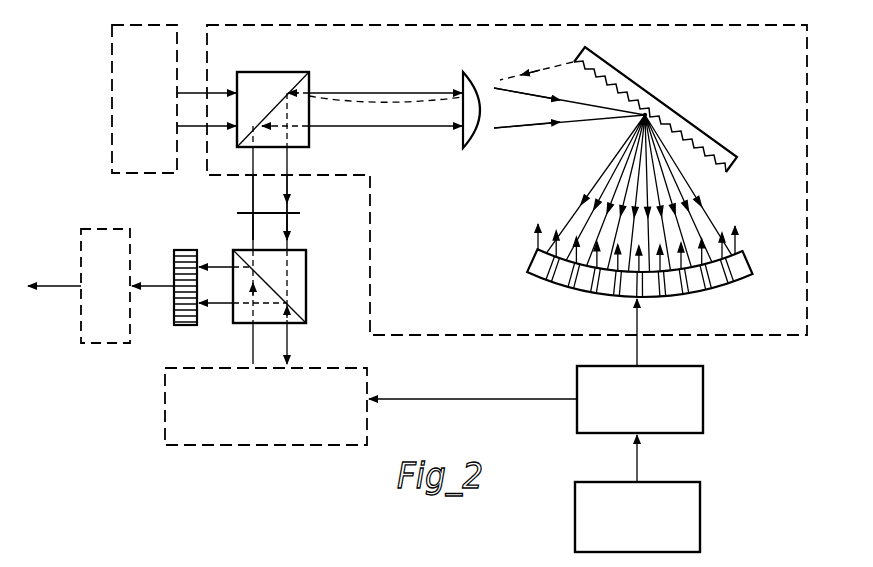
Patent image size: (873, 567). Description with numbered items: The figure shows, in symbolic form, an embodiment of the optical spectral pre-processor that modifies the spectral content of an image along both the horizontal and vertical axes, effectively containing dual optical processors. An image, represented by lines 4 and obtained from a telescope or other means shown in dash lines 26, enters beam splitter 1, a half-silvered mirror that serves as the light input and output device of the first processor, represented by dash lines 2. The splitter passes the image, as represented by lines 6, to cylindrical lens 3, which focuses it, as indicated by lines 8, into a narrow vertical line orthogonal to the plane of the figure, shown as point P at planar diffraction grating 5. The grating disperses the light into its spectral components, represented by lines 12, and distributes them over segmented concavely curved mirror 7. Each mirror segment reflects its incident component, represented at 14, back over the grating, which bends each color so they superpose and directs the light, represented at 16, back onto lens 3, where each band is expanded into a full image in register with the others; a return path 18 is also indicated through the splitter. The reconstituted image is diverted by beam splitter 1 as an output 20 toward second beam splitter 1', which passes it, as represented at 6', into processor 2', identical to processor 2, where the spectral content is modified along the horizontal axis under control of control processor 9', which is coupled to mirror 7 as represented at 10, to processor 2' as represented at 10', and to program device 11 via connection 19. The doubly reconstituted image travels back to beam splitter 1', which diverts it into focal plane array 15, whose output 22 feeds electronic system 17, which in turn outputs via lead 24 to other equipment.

The beam splitter 1 is at (273, 97).
The second beam splitter 1' is at (281, 286).
The optical spectral pre-processor 2 is at (518, 180).
The second processor 2' is at (266, 406).
The cylindrical lens 3 is at (488, 72).
The image lines 4 is at (192, 90).
The planar diffraction grating 5 is at (644, 76).
The light lines 6 is at (385, 95).
The light lines of second processor 6' is at (282, 343).
The segmented concavely curved mirror 7 is at (694, 300).
The focused light lines 8 is at (528, 127).
The control processor 9' is at (652, 399).
The connection to mirror 10 is at (652, 332).
The connection to second processor 10' is at (473, 387).
The program device 11 is at (701, 510).
The dispersed light lines 12 is at (608, 178).
The reflected light component 14 is at (552, 232).
The focal plane array 15 is at (187, 246).
The returned light 16 is at (548, 52).
The electronic system 17 is at (113, 344).
The return beam through splitter 18 is at (418, 103).
The program to processor connection 19 is at (637, 462).
The output 20 is at (288, 188).
The output 22 is at (150, 284).
The lead 24 is at (58, 284).
The telescope 26 is at (112, 125).
The point P is at (640, 116).